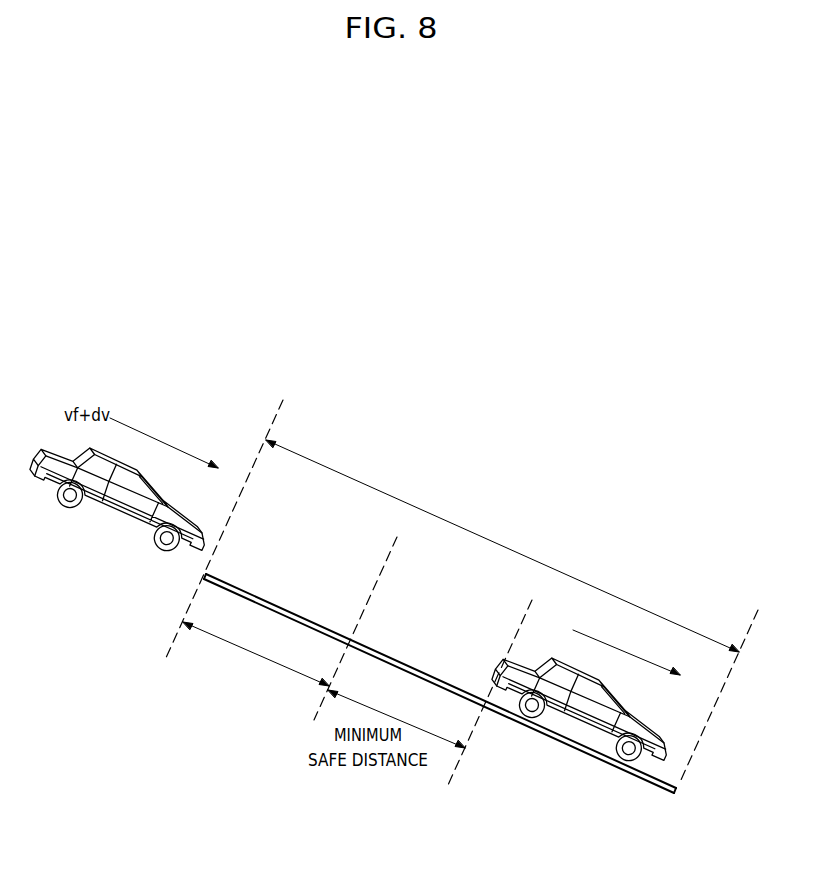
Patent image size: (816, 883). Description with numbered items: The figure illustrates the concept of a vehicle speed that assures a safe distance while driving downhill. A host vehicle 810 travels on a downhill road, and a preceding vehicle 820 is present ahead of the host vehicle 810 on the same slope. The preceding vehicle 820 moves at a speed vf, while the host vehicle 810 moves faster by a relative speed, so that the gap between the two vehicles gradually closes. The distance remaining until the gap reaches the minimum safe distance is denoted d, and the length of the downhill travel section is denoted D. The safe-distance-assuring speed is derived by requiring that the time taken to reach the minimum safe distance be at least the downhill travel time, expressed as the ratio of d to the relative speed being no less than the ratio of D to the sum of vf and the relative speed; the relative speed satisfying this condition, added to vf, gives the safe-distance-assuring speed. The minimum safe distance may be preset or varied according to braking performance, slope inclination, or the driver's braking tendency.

The host vehicle 810 is at (117, 523).
The preceding vehicle 820 is at (580, 728).
The distance of the downhill travel section D is at (502, 546).
The distance to the minimum safe distance d is at (256, 654).
The speed of the preceding vehicle vf is at (617, 644).